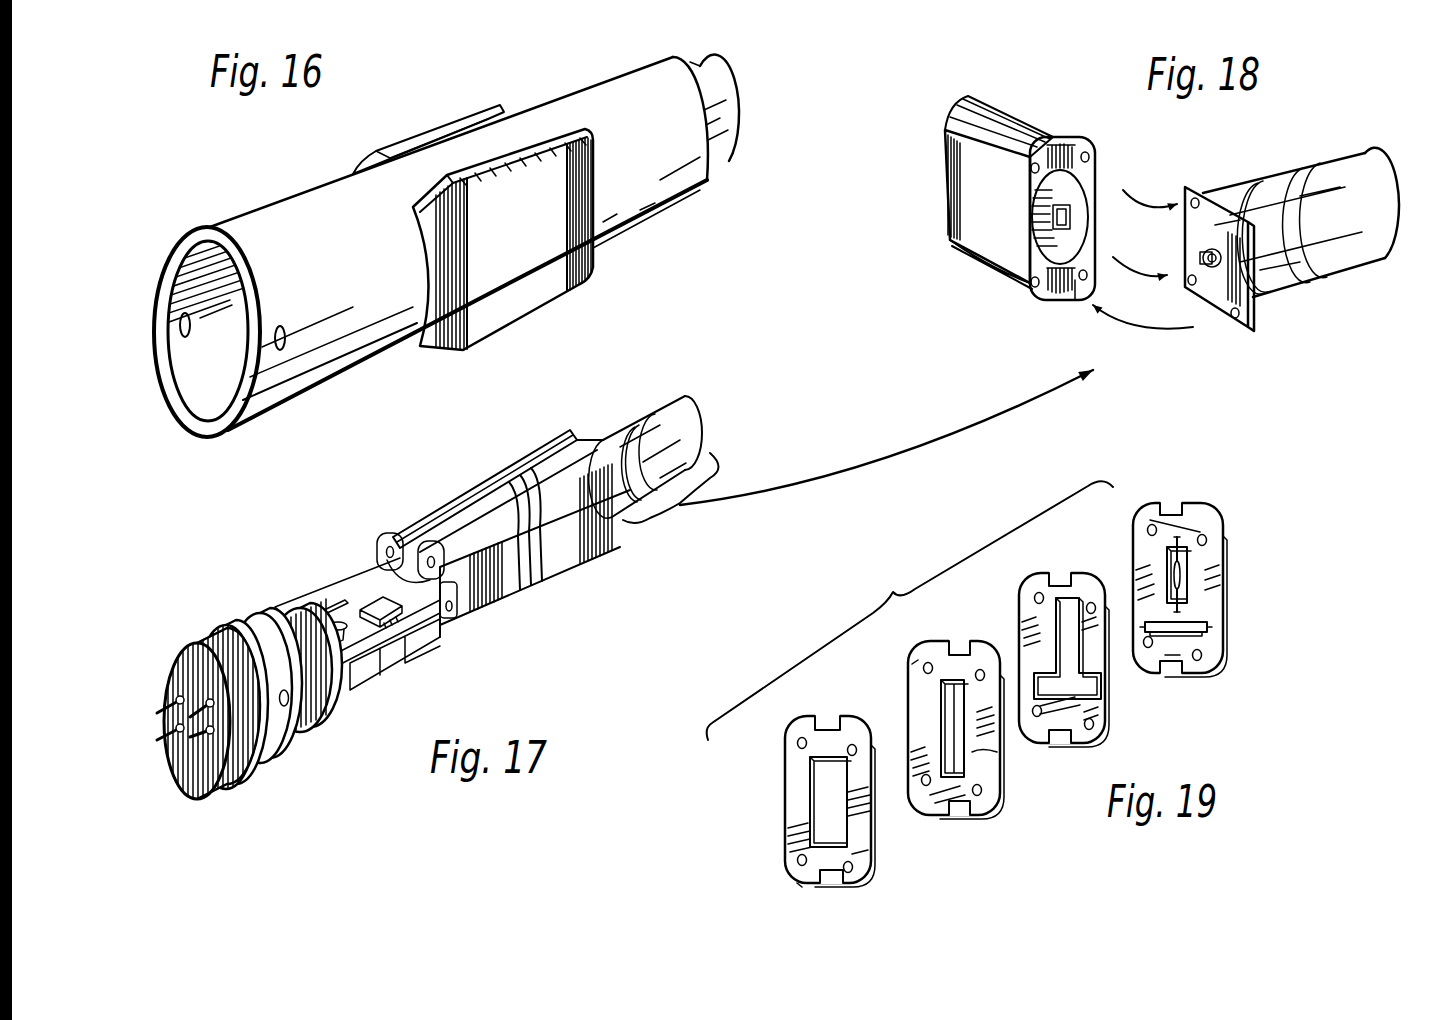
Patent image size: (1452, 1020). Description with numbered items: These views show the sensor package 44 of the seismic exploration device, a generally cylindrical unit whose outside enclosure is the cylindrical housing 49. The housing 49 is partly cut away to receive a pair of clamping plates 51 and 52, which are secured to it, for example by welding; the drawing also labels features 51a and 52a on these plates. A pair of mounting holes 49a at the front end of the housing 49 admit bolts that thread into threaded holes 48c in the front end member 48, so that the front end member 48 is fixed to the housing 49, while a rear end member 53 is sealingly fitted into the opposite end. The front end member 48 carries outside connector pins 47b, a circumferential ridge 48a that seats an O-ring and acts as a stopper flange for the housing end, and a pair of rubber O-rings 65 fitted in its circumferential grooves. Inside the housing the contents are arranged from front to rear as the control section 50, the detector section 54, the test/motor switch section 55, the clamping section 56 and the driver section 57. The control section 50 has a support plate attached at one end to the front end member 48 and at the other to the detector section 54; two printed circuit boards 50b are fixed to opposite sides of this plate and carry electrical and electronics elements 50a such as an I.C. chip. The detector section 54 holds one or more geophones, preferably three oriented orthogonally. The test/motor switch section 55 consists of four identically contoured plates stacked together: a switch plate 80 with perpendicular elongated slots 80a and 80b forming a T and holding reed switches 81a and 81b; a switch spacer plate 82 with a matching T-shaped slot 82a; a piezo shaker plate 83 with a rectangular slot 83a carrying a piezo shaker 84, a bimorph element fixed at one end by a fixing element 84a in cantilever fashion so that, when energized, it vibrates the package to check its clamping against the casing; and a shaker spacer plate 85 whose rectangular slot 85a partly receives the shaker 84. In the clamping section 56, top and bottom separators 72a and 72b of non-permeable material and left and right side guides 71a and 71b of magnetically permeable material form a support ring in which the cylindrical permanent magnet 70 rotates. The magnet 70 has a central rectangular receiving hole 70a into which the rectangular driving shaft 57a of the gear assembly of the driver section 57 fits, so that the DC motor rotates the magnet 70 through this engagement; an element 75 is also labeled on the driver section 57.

In FIG. 16, the sensor package 44 is at (220, 198).
In FIG. 17, the outside connector pins 47b is at (160, 708).
In FIG. 17, the front end member 48 is at (193, 762).
In FIG. 17, the circumferential ridge 48a is at (250, 788).
In FIG. 17, the threaded holes 48c is at (287, 707).
In FIG. 16, the cylindrical housing 49 is at (297, 220).
In FIG. 16, the mounting holes 49a is at (186, 334).
In FIG. 17, the control section 50 is at (373, 687).
In FIG. 17, the electrical and electronics elements 50a is at (377, 593).
In FIG. 17, the printed circuit boards 50b is at (330, 607).
In FIG. 16, the clamping plate 51 is at (360, 167).
In FIG. 16, the rail surface 51a is at (433, 127).
In FIG. 16, the clamping plate 52 is at (593, 250).
In FIG. 16, the block slot 52a is at (536, 145).
In FIG. 16, the rear end member 53 is at (727, 107).
In FIG. 17, the detector section 54 is at (500, 607).
In FIG. 17, the test/motor switch section 55 is at (547, 578).
In FIG. 17, the clamping section 56 is at (545, 440).
In FIG. 18, the clamping section 56 is at (1020, 95).
In FIG. 17, the driver section 57 is at (670, 390).
In FIG. 18, the driver section 57 is at (1405, 120).
In FIG. 18, the driving shaft 57a is at (1290, 298).
In FIG. 17, the rubber O-rings 65 is at (283, 615).
In FIG. 18, the cylindrical permanent magnet 70 is at (1093, 172).
In FIG. 18, the receiving hole 70a is at (1070, 210).
In FIG. 18, the side guide 71a is at (1030, 273).
In FIG. 18, the side guide 71b is at (1080, 288).
In FIG. 18, the top separator 72a is at (1060, 142).
In FIG. 18, the bottom separator 72b is at (1060, 293).
In FIG. 18, the bolt 75 is at (1243, 325).
In FIG. 19, the switch plate 80 is at (1230, 520).
In FIG. 19, the elongated slot 80a is at (1195, 560).
In FIG. 19, the elongated slot 80b is at (1203, 605).
In FIG. 19, the reed switch 81a is at (1182, 580).
In FIG. 19, the reed switch 81b is at (1173, 658).
In FIG. 19, the switch spacer plate 82 is at (1105, 533).
In FIG. 19, the T-shaped slot 82a is at (1087, 661).
In FIG. 19, the piezo shaker plate 83 is at (970, 647).
In FIG. 19, the rectangular slot 83a is at (990, 752).
In FIG. 19, the piezo shaker 84 is at (953, 706).
In FIG. 19, the fixing element 84a is at (918, 661).
In FIG. 19, the shaker spacer plate 85 is at (901, 731).
In FIG. 19, the rectangular slot 85a is at (866, 828).